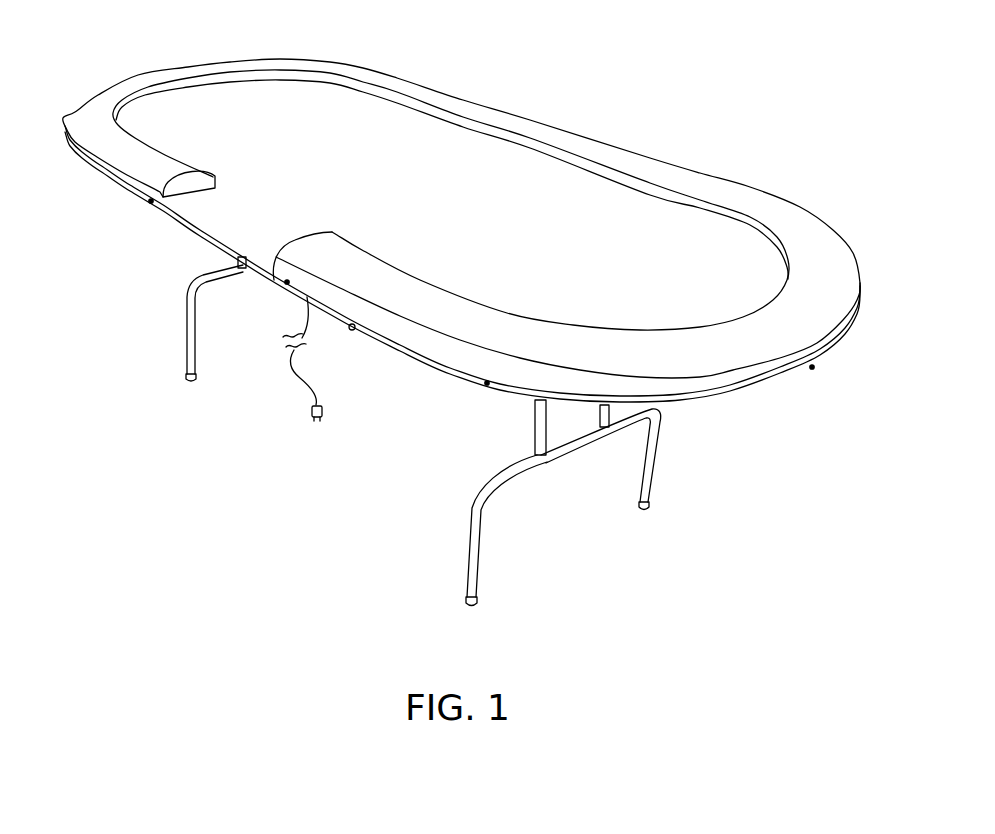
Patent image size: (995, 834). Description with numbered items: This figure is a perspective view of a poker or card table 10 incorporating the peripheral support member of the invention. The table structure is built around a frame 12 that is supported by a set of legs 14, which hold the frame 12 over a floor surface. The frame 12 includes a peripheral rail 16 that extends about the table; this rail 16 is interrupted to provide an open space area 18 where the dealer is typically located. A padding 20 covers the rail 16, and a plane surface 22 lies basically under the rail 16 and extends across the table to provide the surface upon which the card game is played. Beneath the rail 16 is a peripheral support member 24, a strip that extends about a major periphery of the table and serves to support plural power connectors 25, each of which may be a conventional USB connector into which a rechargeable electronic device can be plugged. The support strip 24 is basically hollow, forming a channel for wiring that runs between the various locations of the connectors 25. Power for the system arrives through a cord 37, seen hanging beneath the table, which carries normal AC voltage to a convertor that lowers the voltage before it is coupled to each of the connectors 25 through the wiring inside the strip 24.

The gaming table 10 is at (550, 82).
The frame 12 is at (737, 402).
The legs 14 is at (183, 349).
The peripheral rail 16 is at (130, 183).
The open space area 18 is at (240, 228).
The padding 20 is at (643, 165).
The plane surface 22 is at (492, 221).
The peripheral support member 24 is at (440, 375).
The power connectors 25 is at (151, 203).
The cord 37 is at (290, 378).